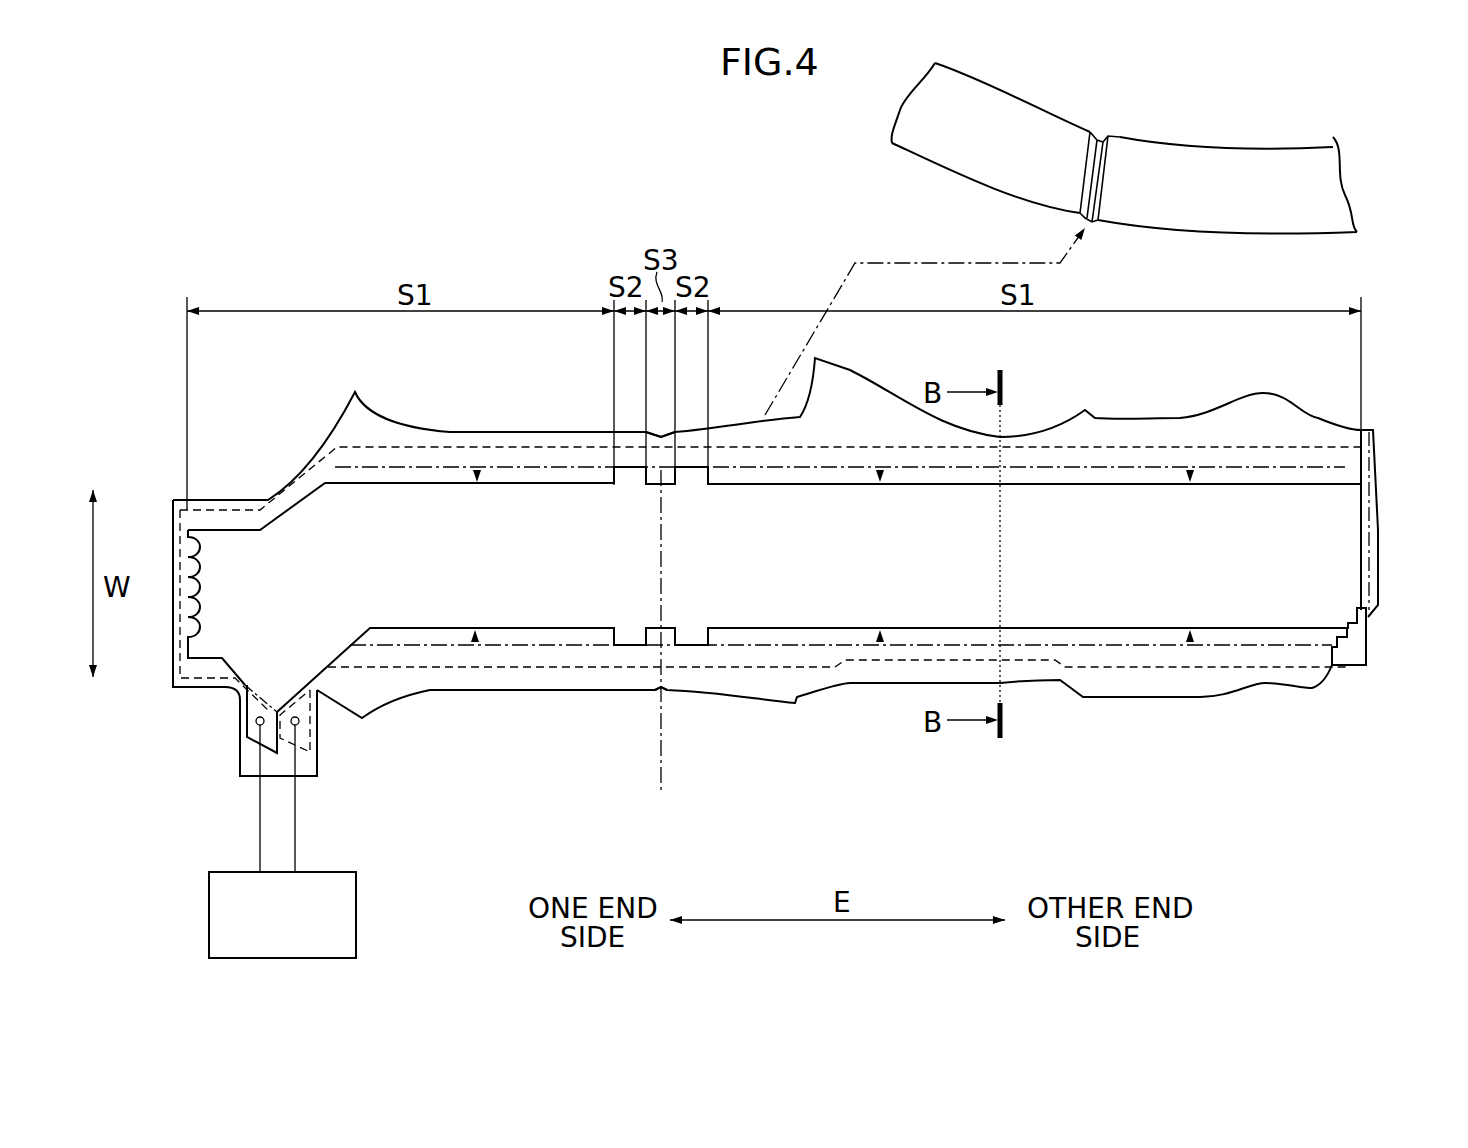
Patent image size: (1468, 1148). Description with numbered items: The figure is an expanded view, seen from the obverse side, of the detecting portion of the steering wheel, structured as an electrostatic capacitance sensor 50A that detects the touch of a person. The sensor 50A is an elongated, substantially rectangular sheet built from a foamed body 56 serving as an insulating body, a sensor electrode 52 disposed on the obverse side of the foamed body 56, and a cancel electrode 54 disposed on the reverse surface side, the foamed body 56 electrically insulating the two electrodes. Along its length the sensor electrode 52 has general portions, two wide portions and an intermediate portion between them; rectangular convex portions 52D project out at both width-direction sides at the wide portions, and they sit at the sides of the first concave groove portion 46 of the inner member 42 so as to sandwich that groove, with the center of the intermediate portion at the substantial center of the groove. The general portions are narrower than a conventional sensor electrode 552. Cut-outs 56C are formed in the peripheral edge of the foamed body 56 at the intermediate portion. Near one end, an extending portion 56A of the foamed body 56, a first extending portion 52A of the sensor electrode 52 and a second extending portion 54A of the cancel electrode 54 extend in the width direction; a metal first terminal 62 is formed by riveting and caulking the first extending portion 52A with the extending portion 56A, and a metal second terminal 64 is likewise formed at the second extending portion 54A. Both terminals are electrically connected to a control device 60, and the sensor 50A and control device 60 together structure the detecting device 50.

The inner member 42 is at (1035, 138).
The first concave groove portion 46 is at (1112, 130).
The detecting device 50 is at (683, 207).
The sensor 50A is at (1318, 415).
The sensor electrode 52 is at (1335, 532).
The first extending portion 52A is at (255, 718).
The convex portion 52D is at (627, 478).
The cancel electrode 54 is at (1352, 653).
The second extending portion 54A is at (310, 692).
The foamed body 56 is at (1140, 683).
The extending portion 56A is at (252, 767).
The cut-out 56C is at (661, 436).
The control device 60 is at (335, 917).
The first terminal 62 is at (250, 723).
The second terminal 64 is at (300, 723).
The conventional sensor electrode 552 is at (1343, 467).